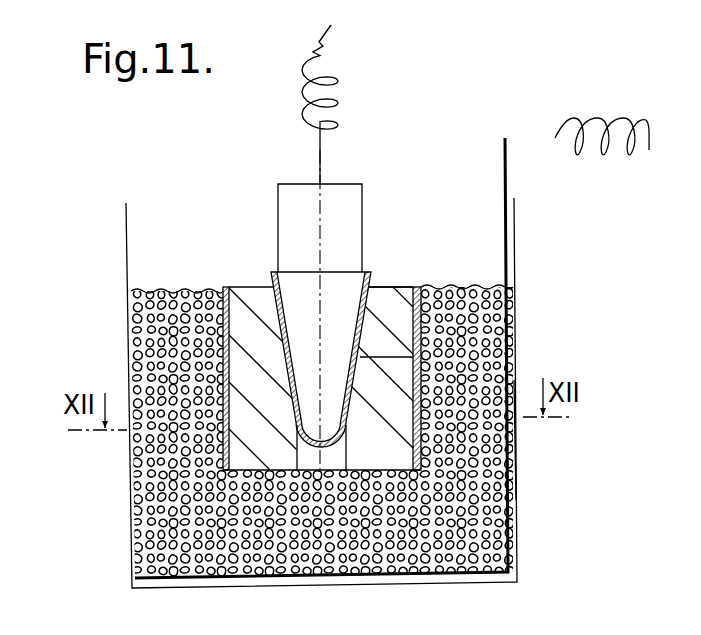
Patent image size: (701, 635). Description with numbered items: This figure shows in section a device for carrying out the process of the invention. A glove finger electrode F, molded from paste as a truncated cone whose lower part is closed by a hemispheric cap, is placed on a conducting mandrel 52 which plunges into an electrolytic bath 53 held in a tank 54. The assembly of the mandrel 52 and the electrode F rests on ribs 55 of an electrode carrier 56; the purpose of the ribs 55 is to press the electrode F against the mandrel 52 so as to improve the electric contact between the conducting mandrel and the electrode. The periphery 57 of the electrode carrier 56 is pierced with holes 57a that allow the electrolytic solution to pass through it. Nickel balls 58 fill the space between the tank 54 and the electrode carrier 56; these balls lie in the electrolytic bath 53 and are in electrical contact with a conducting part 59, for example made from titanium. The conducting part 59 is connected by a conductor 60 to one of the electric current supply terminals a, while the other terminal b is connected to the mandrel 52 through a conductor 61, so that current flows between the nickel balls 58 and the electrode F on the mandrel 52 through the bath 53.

The mandrel 52 is at (357, 194).
The electrolytic bath 53 is at (487, 333).
The tank 54 is at (515, 437).
The ribs 55 is at (247, 318).
The electrode carrier 56 is at (397, 283).
The periphery 57 is at (226, 363).
The holes 57a is at (229, 333).
The nickel balls 58 is at (138, 451).
The conducting part 59 is at (512, 504).
The conductor 60 is at (508, 242).
The conductor 61 is at (320, 154).
The electric current supply terminal a is at (607, 147).
The electric current supply terminal b is at (332, 22).
The glove finger electrode F is at (413, 357).